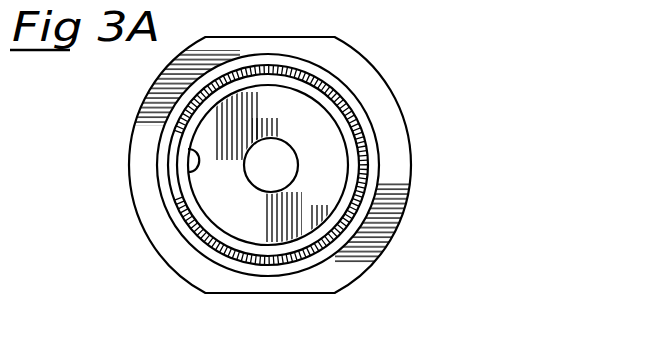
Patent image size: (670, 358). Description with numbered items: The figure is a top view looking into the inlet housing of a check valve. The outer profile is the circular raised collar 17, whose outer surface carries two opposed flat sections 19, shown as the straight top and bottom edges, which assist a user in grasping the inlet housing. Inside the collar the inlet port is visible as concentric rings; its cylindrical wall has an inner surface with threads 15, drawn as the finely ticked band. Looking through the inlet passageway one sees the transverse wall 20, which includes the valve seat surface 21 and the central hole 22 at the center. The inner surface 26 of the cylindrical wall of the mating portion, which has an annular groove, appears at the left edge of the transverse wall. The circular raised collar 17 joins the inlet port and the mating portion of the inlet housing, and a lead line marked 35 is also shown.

The threads 15 is at (370, 149).
The circular raised collar 17 is at (405, 186).
The opposed flat sections 19 is at (283, 37).
The transverse wall 20 is at (334, 138).
The valve seat surface 21 is at (217, 203).
The central hole 22 is at (282, 146).
The inner surface 26 is at (190, 155).
The sheet 35 is at (0, 127).